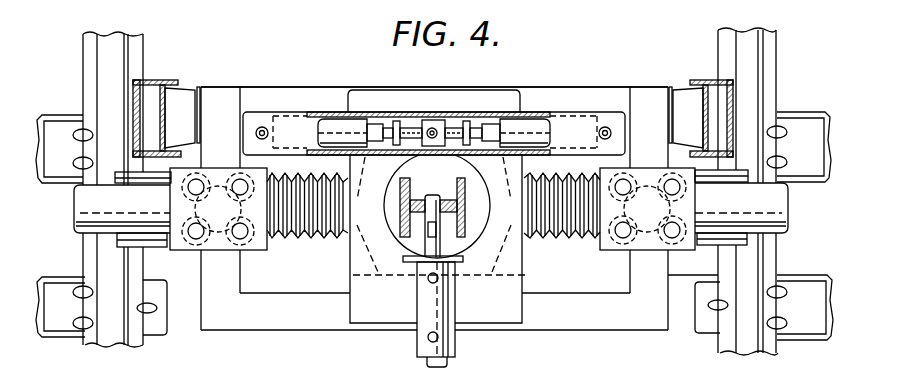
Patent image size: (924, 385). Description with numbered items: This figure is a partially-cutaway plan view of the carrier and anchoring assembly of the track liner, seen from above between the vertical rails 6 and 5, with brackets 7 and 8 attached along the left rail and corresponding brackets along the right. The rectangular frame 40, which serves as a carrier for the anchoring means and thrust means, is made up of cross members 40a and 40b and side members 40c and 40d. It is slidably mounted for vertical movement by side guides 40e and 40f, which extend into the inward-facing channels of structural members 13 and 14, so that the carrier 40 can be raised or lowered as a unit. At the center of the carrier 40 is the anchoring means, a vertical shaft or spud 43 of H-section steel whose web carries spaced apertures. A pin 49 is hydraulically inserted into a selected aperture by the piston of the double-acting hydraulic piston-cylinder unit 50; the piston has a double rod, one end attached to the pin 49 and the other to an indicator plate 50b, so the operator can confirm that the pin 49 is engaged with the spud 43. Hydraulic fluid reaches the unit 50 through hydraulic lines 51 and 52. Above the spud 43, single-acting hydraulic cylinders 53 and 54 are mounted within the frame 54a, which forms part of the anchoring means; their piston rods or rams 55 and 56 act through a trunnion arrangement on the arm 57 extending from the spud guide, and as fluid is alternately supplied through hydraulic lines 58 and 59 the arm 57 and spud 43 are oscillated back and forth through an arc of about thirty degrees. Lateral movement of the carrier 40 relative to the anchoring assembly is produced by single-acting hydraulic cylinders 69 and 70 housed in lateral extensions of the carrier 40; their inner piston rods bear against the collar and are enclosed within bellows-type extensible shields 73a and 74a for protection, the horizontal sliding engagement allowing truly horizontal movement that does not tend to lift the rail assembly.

The right side rail 5 is at (757, 80).
The left side rail 6 is at (83, 70).
The upper bracket 7 is at (58, 163).
The lower bracket 8 is at (58, 338).
The structural member 13 is at (148, 81).
The structural member 14 is at (703, 80).
The rectangular frame 40 is at (575, 320).
The cross member 40a is at (264, 330).
The cross member 40b is at (290, 87).
The side member 40c is at (202, 302).
The side member 40d is at (672, 295).
The side guide 40e is at (178, 100).
The side guide 40f is at (668, 84).
The spud 43 is at (405, 200).
The pin 49 is at (446, 214).
The double-acting hydraulic piston-cylinder unit 50 is at (456, 296).
The indicator plate 50b is at (417, 353).
The hydraulic line 51 is at (428, 280).
The hydraulic line 52 is at (447, 339).
The single-acting hydraulic cylinder 53 is at (330, 124).
The single-acting hydraulic cylinder 54 is at (520, 124).
The frame 54a is at (250, 87).
The piston rod 55 is at (385, 122).
The piston rod 56 is at (487, 122).
The arm 57 is at (433, 130).
The hydraulic line 58 is at (264, 127).
The hydraulic line 59 is at (605, 127).
The single-acting hydraulic cylinder 69 is at (83, 221).
The single-acting hydraulic cylinder 70 is at (783, 218).
The bellows-type extensible shield 73a is at (259, 221).
The bellows-type extensible shield 74a is at (609, 221).